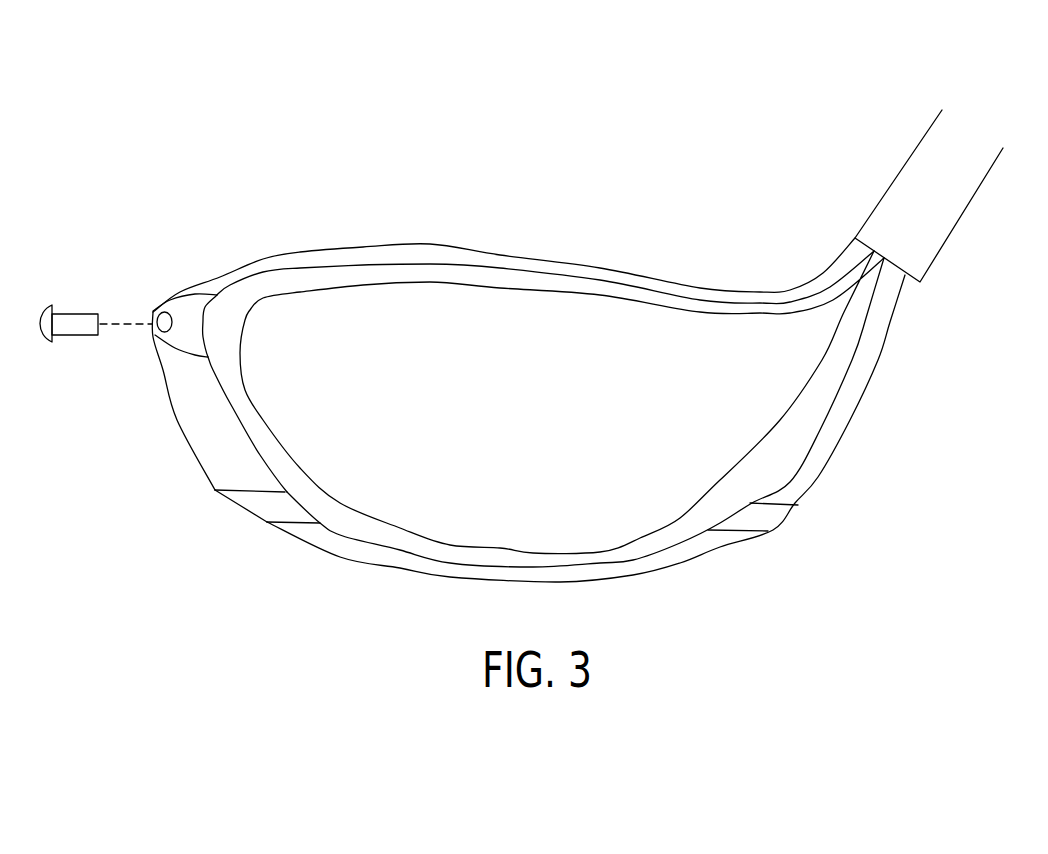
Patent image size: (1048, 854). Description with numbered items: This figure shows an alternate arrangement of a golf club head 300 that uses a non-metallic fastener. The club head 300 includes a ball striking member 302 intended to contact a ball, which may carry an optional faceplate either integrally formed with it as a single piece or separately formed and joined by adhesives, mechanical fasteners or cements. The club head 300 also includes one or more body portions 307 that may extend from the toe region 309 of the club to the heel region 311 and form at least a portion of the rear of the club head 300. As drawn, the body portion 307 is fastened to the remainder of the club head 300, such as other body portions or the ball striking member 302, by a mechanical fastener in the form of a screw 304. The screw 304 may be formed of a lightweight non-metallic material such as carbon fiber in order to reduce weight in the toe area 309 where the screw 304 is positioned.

The golf club head 300 is at (531, 325).
The ball striking member 302 is at (570, 317).
The screw 304 is at (88, 312).
The body portion 307 is at (187, 322).
The toe region 309 is at (157, 465).
The heel region 311 is at (848, 482).